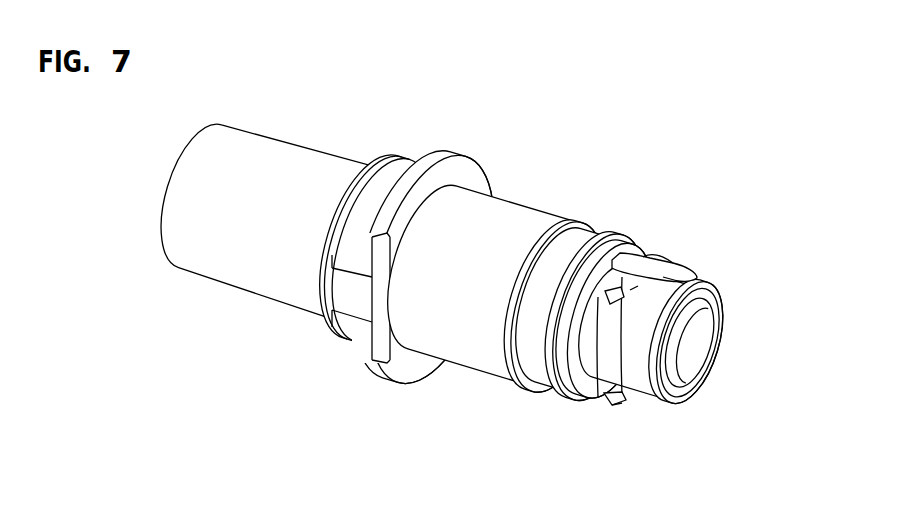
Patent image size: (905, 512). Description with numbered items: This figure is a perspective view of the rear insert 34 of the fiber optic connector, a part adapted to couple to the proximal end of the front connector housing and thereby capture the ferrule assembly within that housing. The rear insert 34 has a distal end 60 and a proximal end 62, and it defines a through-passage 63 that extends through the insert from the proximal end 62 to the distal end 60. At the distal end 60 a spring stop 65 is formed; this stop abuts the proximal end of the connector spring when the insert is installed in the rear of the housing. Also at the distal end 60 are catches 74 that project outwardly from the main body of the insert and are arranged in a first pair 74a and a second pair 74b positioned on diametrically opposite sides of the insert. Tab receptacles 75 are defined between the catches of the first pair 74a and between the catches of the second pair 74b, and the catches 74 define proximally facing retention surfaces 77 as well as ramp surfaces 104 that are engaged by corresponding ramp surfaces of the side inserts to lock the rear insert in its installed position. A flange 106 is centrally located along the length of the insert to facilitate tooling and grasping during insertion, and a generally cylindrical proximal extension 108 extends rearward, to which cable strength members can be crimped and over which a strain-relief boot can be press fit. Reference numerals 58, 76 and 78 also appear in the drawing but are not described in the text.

The rear insert 34 is at (482, 252).
The coupling body 58 is at (554, 400).
The distal end 60 is at (749, 290).
The proximal end 62 is at (146, 288).
The through-passage 63 is at (716, 366).
The spring stop 65 is at (735, 313).
The catches 74 is at (668, 240).
The first pair of catches 74a is at (606, 294).
The second pair of catches 74b is at (608, 400).
The tab receptacles 75 is at (690, 279).
The clip head ridge 76 is at (695, 248).
The retention surfaces 77 is at (650, 252).
The clip bottom end 78 is at (632, 424).
The ramp surfaces 104 is at (645, 281).
The flange 106 is at (460, 157).
The proximal extension 108 is at (288, 150).